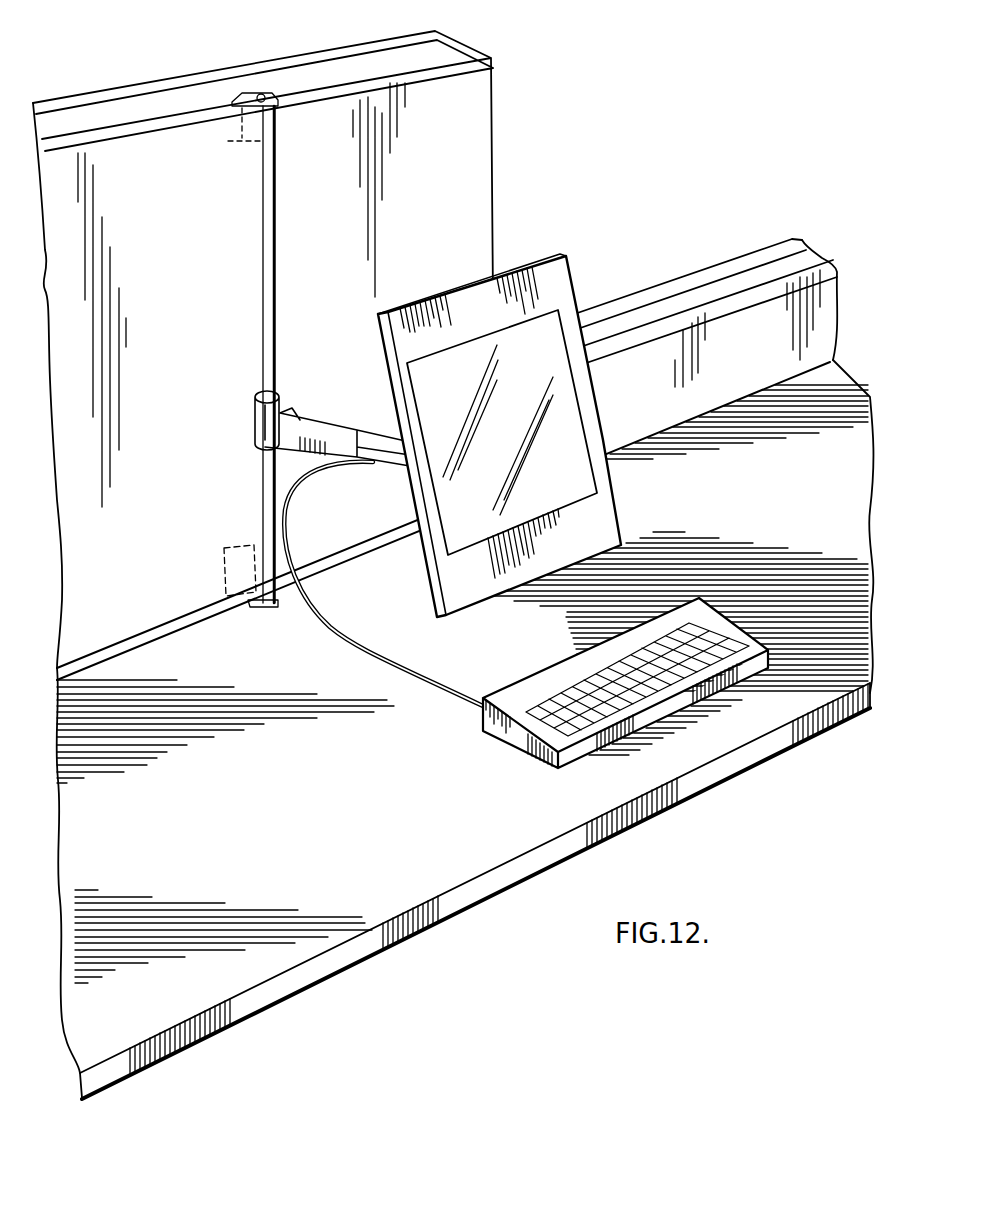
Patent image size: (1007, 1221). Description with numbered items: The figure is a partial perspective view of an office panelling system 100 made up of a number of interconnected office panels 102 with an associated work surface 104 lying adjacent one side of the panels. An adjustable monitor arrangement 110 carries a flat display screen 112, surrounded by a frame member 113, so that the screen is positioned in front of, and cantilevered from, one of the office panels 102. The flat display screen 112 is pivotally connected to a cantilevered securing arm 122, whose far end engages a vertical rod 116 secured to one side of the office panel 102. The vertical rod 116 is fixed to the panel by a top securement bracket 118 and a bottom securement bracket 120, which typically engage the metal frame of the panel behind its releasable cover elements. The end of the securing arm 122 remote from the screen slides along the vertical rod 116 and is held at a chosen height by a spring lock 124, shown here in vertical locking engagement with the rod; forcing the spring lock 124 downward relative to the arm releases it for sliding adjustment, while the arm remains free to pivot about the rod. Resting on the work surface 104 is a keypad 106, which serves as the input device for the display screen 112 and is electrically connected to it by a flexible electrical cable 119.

The office panelling system 100 is at (643, 157).
The office panel 102 is at (525, 140).
The work surface 104 is at (260, 829).
The keypad 106 is at (510, 730).
The adjustable monitor arrangement 110 is at (504, 369).
The flat display screen 112 is at (532, 387).
The frame member 113 is at (553, 285).
The vertical rod 116 is at (266, 253).
The top securement bracket 118 is at (233, 143).
The flexible electrical cable 119 is at (322, 627).
The bottom securement bracket 120 is at (222, 577).
The cantilevered securing arm 122 is at (327, 412).
The spring lock 124 is at (283, 400).